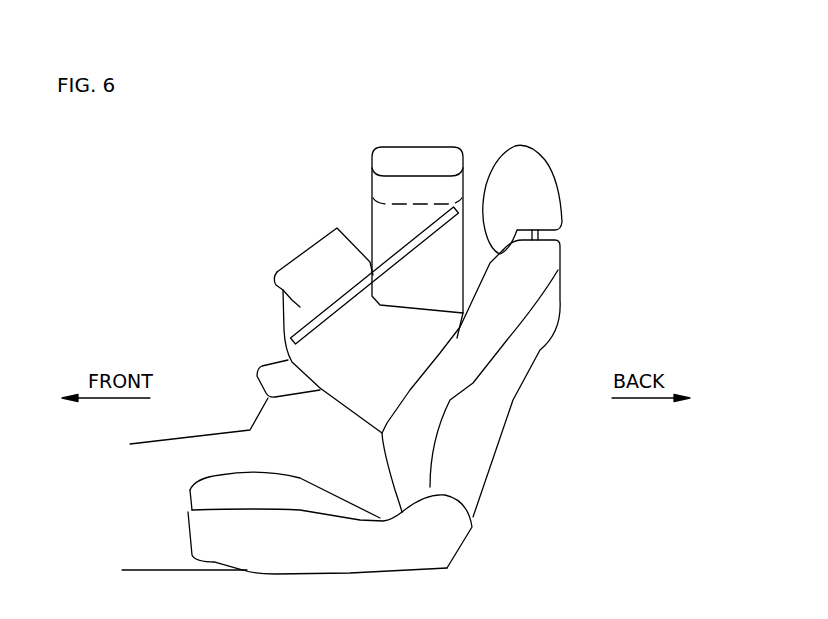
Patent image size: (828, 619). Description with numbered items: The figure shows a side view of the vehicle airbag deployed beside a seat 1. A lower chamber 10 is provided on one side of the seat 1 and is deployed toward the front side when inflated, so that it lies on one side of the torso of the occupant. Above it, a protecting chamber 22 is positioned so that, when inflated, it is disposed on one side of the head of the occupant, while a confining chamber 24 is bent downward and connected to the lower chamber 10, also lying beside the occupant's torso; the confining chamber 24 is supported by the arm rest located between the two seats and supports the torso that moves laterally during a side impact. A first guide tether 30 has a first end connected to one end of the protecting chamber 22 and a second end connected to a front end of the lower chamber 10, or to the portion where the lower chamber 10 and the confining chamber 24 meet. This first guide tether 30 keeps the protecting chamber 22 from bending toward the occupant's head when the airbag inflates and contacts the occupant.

The seat 1 is at (513, 297).
The lower chamber 10 is at (387, 365).
The protecting chamber 22 is at (385, 162).
The confining chamber 24 is at (300, 268).
The first guide tether 30 is at (418, 238).